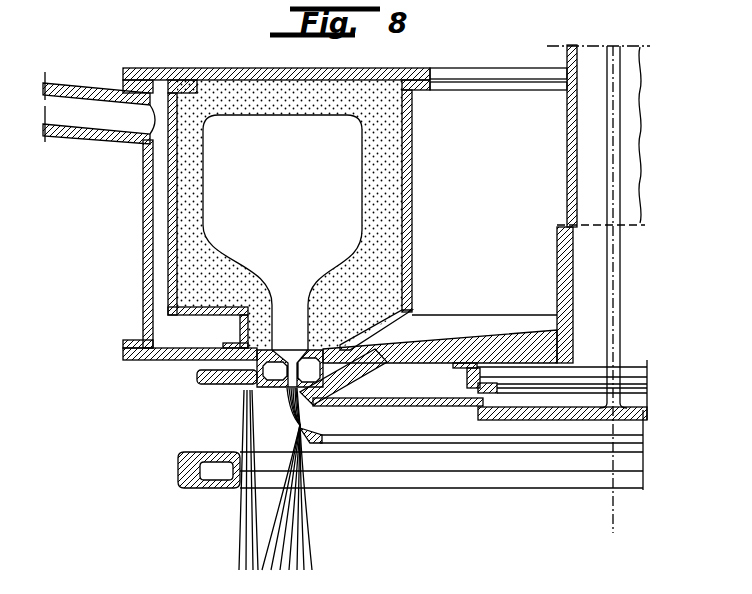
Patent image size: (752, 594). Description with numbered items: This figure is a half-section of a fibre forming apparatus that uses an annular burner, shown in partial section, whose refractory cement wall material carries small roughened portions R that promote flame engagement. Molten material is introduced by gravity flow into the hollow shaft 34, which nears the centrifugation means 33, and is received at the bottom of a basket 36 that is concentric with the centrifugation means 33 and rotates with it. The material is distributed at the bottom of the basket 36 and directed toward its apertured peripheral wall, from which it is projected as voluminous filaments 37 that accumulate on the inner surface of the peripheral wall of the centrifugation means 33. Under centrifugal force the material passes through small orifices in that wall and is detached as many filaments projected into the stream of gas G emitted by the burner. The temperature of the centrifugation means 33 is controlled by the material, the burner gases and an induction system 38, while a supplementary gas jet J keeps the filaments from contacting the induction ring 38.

The roughened portions R is at (210, 135).
The centrifugation means 33 is at (442, 348).
The hollow shaft 34 is at (567, 163).
The basket 36 is at (530, 418).
The voluminous filaments 37 is at (405, 408).
The induction system 38 is at (183, 452).
The supplementary gas jet J is at (242, 415).
The stream of gas G is at (287, 406).